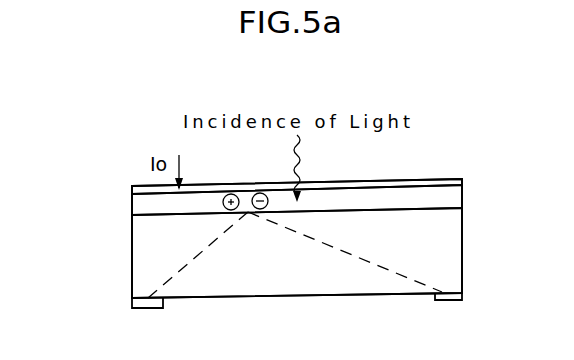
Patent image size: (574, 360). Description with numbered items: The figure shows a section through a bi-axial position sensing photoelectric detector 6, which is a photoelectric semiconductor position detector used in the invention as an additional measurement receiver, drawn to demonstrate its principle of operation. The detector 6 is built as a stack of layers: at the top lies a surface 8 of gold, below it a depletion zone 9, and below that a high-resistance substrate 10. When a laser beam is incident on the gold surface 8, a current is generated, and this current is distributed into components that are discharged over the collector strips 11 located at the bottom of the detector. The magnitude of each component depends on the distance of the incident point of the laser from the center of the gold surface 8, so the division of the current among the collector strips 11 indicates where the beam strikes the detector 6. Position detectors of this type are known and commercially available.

The bi-axial position sensing photoelectric detector 6 is at (132, 243).
The surface of gold 8 is at (383, 180).
The depletion zone 9 is at (450, 197).
The high-resistance substrate 10 is at (442, 248).
The collector strips 11 is at (145, 306).